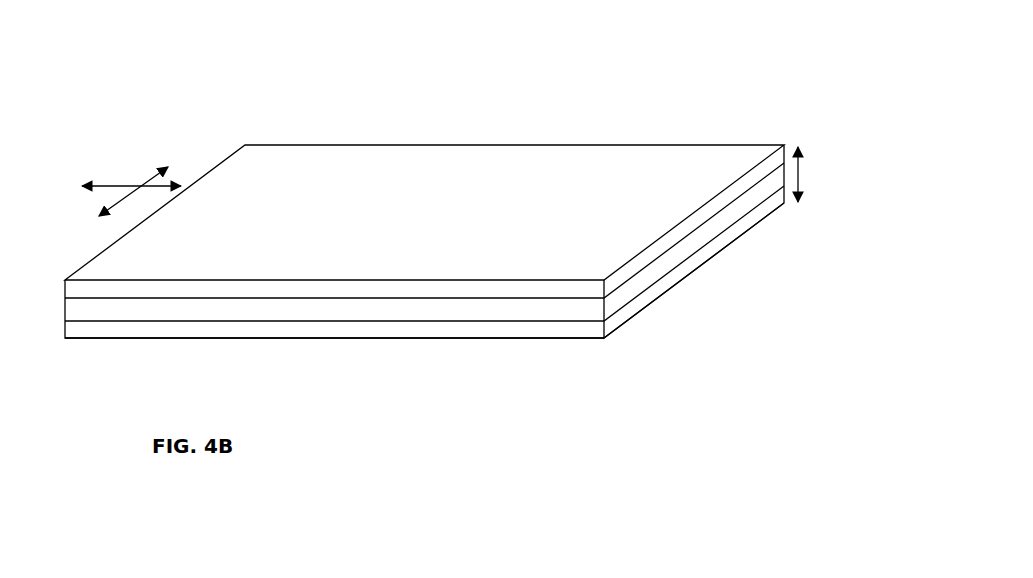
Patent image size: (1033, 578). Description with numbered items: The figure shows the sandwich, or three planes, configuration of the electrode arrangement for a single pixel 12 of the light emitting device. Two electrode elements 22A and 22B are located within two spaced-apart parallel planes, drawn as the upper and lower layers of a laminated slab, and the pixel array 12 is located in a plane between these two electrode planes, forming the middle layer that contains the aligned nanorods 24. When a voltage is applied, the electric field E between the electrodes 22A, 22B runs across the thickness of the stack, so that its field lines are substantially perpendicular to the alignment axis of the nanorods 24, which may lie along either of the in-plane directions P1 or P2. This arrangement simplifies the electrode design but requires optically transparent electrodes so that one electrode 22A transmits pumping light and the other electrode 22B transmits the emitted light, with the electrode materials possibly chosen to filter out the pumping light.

The pixel 12 is at (640, 97).
The electrode element 22A is at (520, 170).
The electrode element 22B is at (500, 332).
The nanorods 24 is at (683, 243).
The electric field E is at (815, 174).
The alignment axis P1 is at (152, 176).
The alignment axis P2 is at (98, 187).